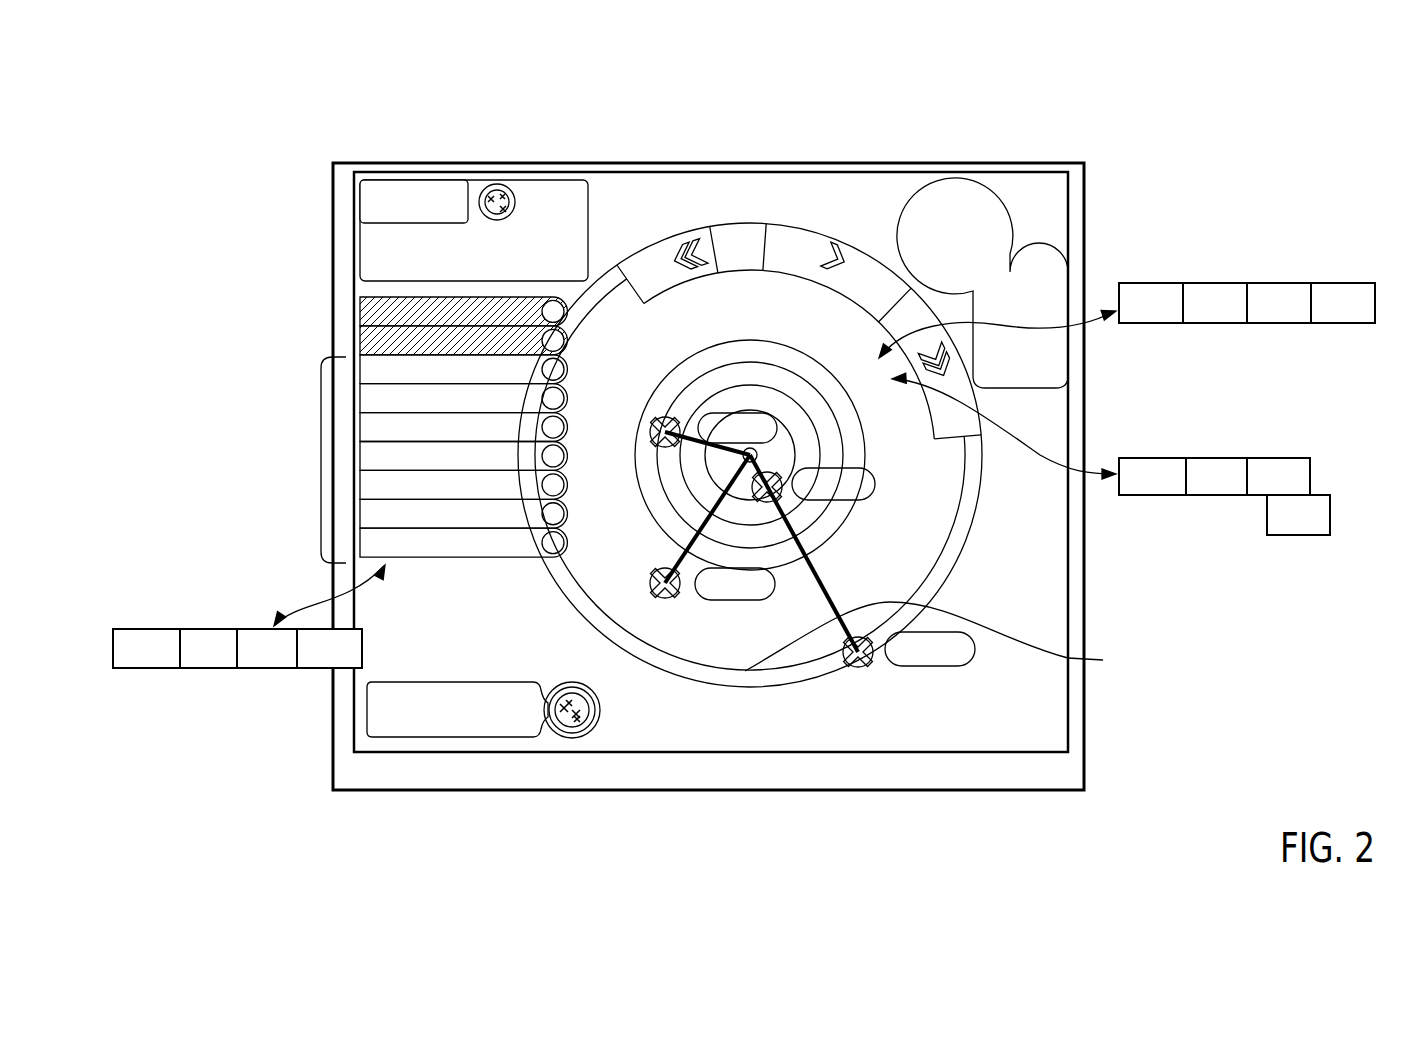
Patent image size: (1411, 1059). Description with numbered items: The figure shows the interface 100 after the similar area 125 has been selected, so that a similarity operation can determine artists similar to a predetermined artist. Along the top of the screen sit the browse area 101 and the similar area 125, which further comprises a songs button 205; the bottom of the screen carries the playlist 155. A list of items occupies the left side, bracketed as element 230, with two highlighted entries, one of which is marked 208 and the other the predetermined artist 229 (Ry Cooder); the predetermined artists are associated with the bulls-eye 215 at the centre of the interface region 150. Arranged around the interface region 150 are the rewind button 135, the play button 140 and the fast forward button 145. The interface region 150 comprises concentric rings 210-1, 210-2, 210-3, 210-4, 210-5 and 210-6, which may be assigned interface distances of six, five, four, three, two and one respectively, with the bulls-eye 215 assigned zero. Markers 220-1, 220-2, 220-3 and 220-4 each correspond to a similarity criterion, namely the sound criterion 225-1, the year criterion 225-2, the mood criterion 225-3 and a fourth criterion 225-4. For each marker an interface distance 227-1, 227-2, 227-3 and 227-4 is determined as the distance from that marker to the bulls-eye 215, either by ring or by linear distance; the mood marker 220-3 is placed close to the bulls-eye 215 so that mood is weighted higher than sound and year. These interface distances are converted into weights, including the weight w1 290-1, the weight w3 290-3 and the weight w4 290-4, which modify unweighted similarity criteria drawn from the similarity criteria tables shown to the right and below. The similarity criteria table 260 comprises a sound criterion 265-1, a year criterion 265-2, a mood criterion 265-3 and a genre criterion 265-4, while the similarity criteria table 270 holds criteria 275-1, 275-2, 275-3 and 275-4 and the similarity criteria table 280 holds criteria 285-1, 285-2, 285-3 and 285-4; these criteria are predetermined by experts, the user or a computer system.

The interface 100 is at (1140, 129).
The browse area 101 is at (417, 187).
The similar area 125 is at (571, 190).
The rewind button 135 is at (753, 258).
The play button 140 is at (886, 303).
The fast forward button 145 is at (966, 418).
The interface region 150 is at (613, 455).
The playlist 155 is at (500, 720).
The songs button 205 is at (360, 256).
The first highlighted list entry 208 is at (360, 314).
The predetermined artist 229 is at (360, 346).
The list of entries 230 is at (418, 424).
The bulls-eye 215 is at (826, 401).
The concentric ring 210-1 is at (956, 519).
The concentric ring 210-2 is at (925, 603).
The concentric ring 210-3 is at (868, 460).
The concentric ring 210-4 is at (813, 431).
The concentric ring 210-5 is at (819, 547).
The concentric ring 210-6 is at (646, 516).
The marker 220-1 is at (650, 428).
The marker 220-2 is at (668, 600).
The marker 220-3 is at (768, 503).
The marker 220-4 is at (858, 670).
The sound similarity criterion 225-1 is at (733, 412).
The year similarity criterion 225-2 is at (750, 600).
The mood similarity criterion 225-3 is at (872, 500).
The similarity criterion 225-4 is at (920, 667).
The interface distance 227-1 is at (688, 436).
The interface distance 227-2 is at (498, 635).
The interface distance 227-3 is at (1009, 483).
The interface distance 227-4 is at (1215, 663).
The similarity criteria table 260 is at (1201, 272).
The sound criterion 265-1 is at (1155, 323).
The year criterion 265-2 is at (1216, 323).
The mood criterion 265-3 is at (1286, 323).
The genre criterion 265-4 is at (1345, 283).
The similarity criteria table 270 is at (1208, 521).
The similarity criterion 275-1 is at (1146, 458).
The similarity criterion 275-2 is at (1220, 458).
The similarity criterion 275-3 is at (1290, 458).
The similarity criterion 275-4 is at (1290, 535).
The similarity criteria table 280 is at (205, 627).
The similarity criterion 285-1 is at (147, 668).
The similarity criterion 285-2 is at (203, 668).
The similarity criterion 285-3 is at (257, 668).
The similarity criterion 285-4 is at (320, 668).
The weight w1 290-1 is at (778, 194).
The weight w3 290-3 is at (1048, 488).
The weight w4 290-4 is at (1237, 685).